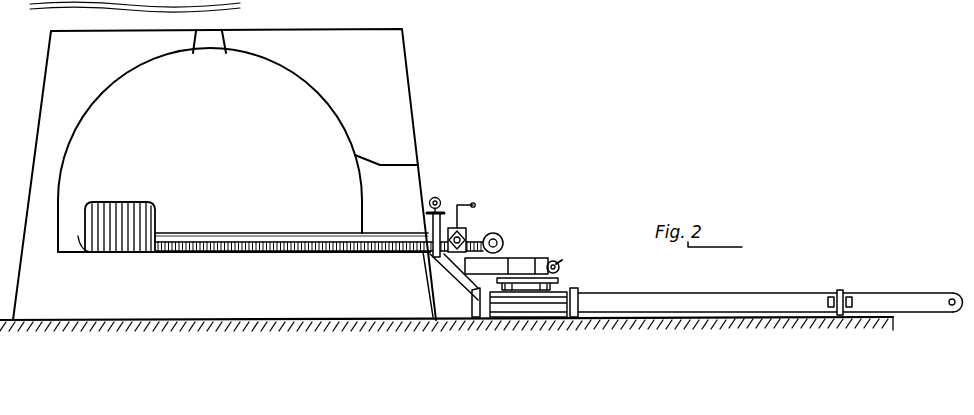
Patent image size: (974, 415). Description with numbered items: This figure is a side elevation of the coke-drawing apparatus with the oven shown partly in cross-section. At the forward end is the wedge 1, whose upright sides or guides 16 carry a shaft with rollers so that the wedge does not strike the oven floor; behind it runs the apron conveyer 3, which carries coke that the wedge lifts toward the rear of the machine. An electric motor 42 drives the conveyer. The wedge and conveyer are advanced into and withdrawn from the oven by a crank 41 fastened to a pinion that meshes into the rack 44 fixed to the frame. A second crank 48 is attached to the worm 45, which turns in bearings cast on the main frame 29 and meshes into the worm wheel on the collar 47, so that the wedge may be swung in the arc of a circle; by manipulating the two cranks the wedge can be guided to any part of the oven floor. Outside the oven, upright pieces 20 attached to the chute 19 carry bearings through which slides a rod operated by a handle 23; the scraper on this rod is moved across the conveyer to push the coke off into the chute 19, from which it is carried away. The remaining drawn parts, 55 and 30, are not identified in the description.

The wedge 1 is at (78, 248).
The upright sides or guides of the wedge 16 is at (140, 206).
The apron conveyer 3 is at (193, 243).
The rack 44 is at (378, 252).
The upright pieces 20 is at (428, 256).
The chute 19 is at (467, 286).
The handle 23 is at (436, 198).
The gear box 55 is at (475, 237).
The crank 41 is at (462, 224).
The electric motor 42 is at (500, 237).
The main frame 29 is at (549, 259).
The worm 45 is at (560, 268).
The crank 48 is at (563, 261).
The collar 47 is at (535, 257).
The pipe 30 is at (580, 291).